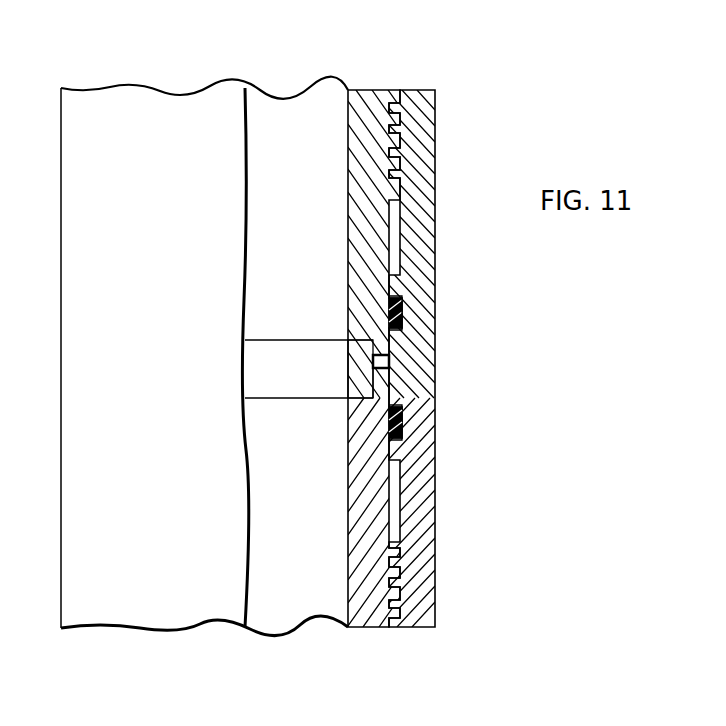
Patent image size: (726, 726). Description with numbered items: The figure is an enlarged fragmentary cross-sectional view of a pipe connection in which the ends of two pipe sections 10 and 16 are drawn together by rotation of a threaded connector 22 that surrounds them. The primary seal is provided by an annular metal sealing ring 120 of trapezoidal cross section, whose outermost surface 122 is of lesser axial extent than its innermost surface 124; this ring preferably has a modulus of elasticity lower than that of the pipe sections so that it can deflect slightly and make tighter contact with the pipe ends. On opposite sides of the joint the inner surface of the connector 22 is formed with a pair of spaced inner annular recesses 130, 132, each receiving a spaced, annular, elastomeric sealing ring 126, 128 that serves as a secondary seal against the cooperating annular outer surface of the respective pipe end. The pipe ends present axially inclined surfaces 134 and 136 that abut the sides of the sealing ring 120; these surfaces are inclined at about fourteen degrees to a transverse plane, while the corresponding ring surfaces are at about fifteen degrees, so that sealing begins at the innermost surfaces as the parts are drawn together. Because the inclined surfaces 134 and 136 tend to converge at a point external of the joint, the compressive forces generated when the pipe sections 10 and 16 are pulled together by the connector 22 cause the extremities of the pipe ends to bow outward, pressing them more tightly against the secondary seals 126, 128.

The pipe section 10 is at (365, 597).
The pipe section 16 is at (362, 138).
The connector 22 is at (418, 145).
The annular metal sealing ring 120 is at (358, 365).
The outermost surface 122 is at (392, 362).
The innermost surface 124 is at (350, 385).
The elastomeric sealing ring 126 is at (398, 318).
The elastomeric sealing ring 128 is at (402, 432).
The inner annular recess 130 is at (402, 305).
The inner annular recess 132 is at (402, 412).
The axially inclined pipe end surface 134 is at (353, 430).
The axially inclined pipe end surface 136 is at (356, 322).